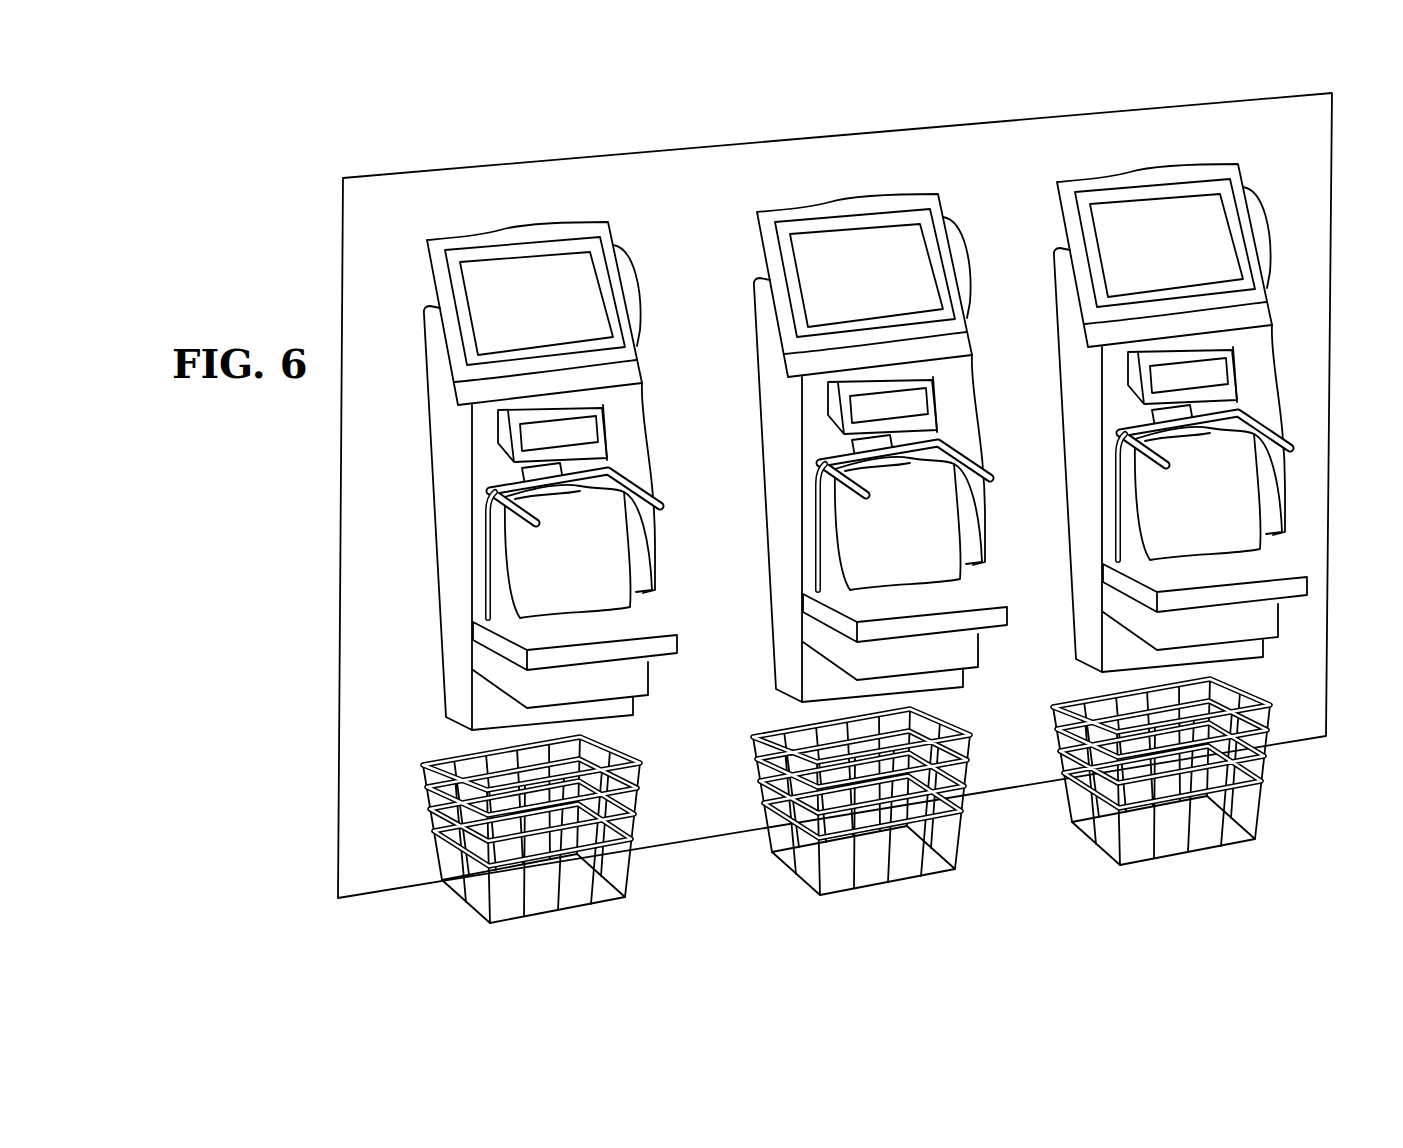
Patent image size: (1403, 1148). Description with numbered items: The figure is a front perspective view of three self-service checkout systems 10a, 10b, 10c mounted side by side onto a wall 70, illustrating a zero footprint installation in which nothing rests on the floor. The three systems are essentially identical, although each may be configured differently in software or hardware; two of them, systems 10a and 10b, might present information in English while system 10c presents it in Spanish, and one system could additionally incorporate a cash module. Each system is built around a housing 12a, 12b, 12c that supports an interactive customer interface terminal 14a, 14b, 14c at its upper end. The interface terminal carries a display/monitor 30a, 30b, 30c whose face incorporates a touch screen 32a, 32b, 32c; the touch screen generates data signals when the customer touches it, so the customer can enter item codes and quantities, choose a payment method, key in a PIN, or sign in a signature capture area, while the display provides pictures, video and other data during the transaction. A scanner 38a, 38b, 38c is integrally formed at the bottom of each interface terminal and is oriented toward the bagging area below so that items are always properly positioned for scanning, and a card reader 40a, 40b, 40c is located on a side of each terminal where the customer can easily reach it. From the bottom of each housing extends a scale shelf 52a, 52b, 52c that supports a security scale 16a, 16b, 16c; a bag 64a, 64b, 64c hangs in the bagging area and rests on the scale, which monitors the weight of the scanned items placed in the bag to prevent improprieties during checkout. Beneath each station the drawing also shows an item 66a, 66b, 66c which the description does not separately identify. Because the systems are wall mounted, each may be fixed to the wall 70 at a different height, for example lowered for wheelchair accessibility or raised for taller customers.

The self-checkout system 10a is at (505, 158).
The self-checkout system 10b is at (882, 492).
The self-checkout system 10c is at (1196, 471).
The housing 12a is at (452, 543).
The housing 12b is at (847, 490).
The housing 12c is at (1145, 460).
The interactive customer interface terminal 14a is at (504, 294).
The interactive customer interface terminal 14b is at (864, 264).
The interactive customer interface terminal 14c is at (1186, 234).
The scale 16a is at (649, 631).
The scale 16b is at (928, 603).
The scale 16c is at (1245, 577).
The display/monitor 30a is at (450, 274).
The display/monitor 30b is at (865, 244).
The display/monitor 30c is at (1165, 214).
The touch screen 32a is at (487, 290).
The touch screen 32b is at (901, 258).
The touch screen 32c is at (1202, 234).
The scanner 38a is at (525, 437).
The scanner 38b is at (935, 390).
The scanner 38c is at (1262, 373).
The card reader 40a is at (628, 286).
The card reader 40b is at (989, 267).
The card reader 40c is at (1320, 237).
The scale shelf 52a is at (640, 684).
The scale shelf 52b is at (922, 657).
The scale shelf 52c is at (1245, 627).
The bag 64a is at (593, 573).
The bag 64b is at (908, 523).
The bag 64c is at (1208, 493).
The basket 66a is at (612, 888).
The basket 66b is at (865, 814).
The basket 66c is at (1166, 782).
The wall 70 is at (345, 720).